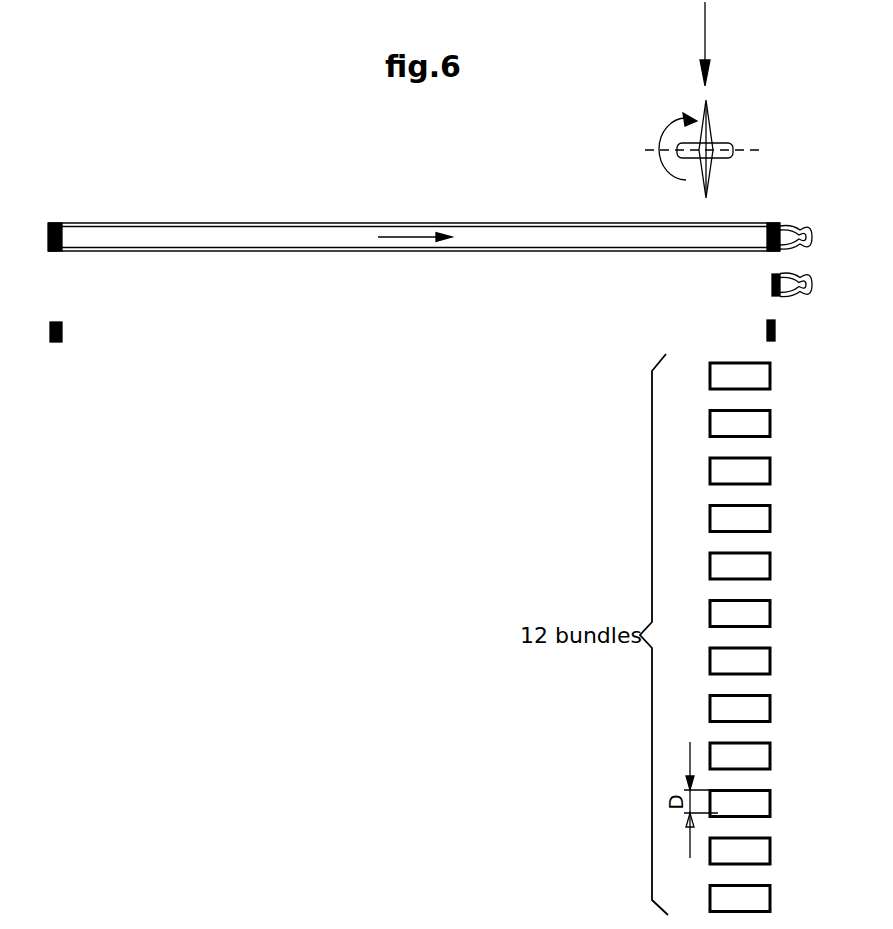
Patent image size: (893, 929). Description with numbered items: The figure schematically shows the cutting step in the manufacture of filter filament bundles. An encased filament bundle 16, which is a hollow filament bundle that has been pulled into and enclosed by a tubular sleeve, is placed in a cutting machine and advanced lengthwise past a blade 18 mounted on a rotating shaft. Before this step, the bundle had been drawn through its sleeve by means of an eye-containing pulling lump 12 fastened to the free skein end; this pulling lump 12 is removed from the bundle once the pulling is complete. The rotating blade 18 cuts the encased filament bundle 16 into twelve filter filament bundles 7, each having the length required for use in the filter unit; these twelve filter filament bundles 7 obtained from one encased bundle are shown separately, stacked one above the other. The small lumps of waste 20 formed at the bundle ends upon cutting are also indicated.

The encased filament bundle 16 is at (160, 240).
The blade 18 is at (713, 128).
The eye-containing lump 12 is at (771, 285).
The small lumps of waste 20 is at (62, 332).
The filter filament bundle 7 is at (716, 380).